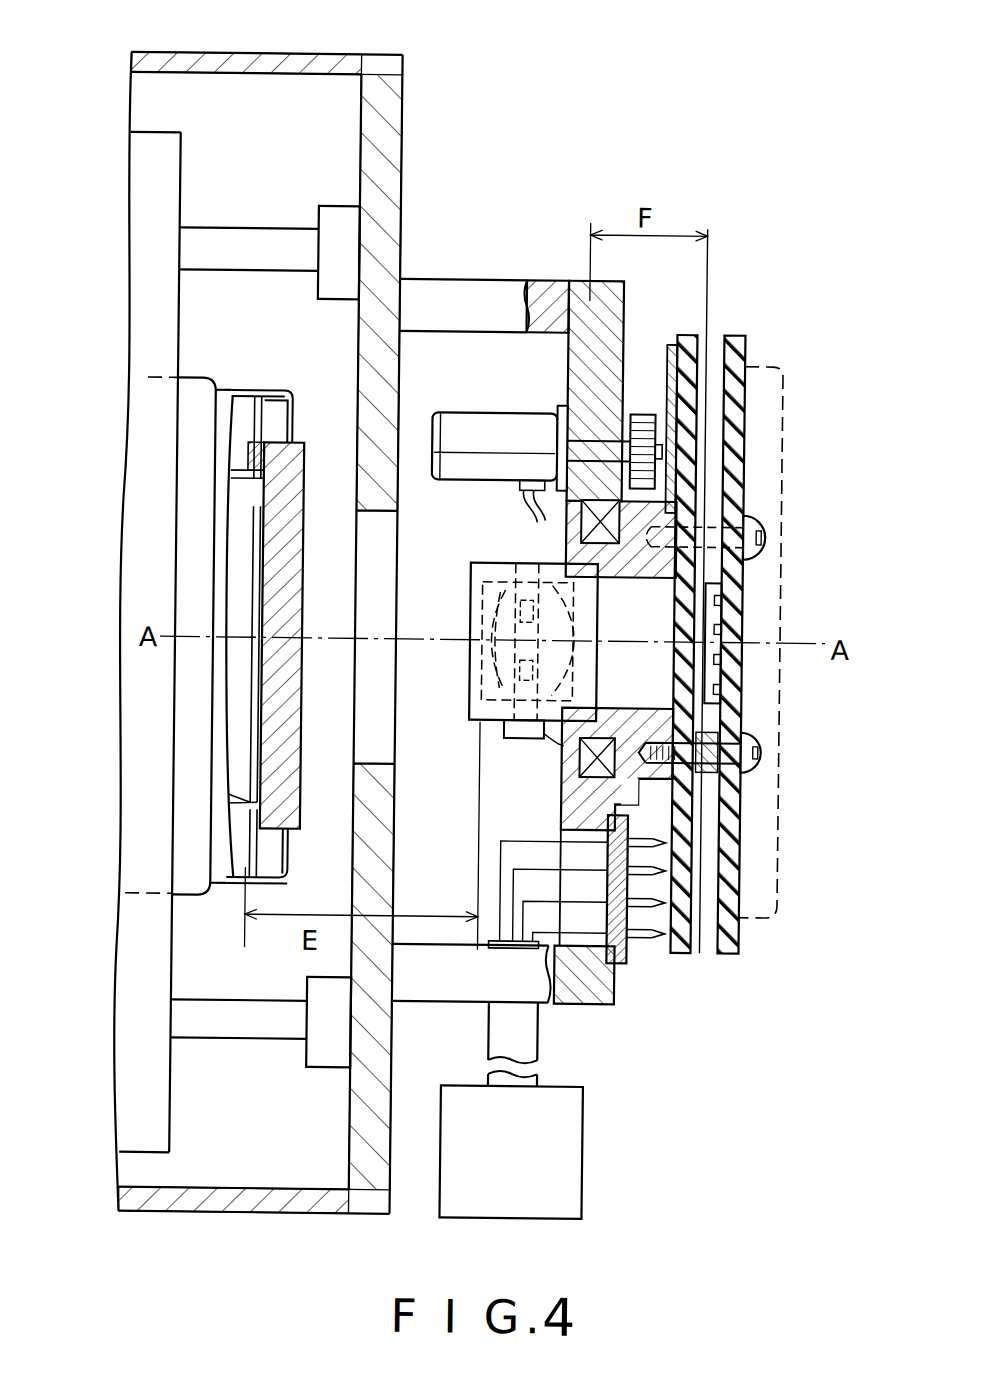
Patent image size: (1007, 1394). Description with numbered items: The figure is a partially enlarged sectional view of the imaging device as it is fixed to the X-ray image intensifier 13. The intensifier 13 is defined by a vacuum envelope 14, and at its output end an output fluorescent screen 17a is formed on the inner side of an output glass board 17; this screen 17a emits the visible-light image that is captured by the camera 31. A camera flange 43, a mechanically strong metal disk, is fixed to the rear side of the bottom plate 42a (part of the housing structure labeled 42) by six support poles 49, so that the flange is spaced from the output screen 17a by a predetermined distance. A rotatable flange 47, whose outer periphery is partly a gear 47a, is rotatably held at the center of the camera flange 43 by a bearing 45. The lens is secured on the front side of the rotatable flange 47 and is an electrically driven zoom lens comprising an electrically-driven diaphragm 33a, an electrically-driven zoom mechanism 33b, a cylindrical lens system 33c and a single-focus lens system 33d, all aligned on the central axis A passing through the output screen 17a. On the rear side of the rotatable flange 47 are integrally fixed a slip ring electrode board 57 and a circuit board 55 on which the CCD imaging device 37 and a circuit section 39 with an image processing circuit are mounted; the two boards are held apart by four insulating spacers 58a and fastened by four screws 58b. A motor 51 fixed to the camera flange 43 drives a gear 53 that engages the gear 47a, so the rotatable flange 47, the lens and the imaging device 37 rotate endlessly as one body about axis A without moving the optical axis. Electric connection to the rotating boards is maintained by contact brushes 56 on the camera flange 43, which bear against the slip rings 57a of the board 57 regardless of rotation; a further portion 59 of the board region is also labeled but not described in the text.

The X-ray image intensifier 13 is at (195, 906).
The vacuum envelope 14 is at (204, 384).
The output glass board 17 is at (300, 831).
The output fluorescent screen 17a is at (259, 738).
The camera 31 is at (722, 226).
The electrically-driven diaphragm 33a is at (530, 703).
The electrically-driven zoom mechanism 33b is at (491, 580).
The cylindrical lens system 33c is at (482, 680).
The single-focus lens system 33d is at (597, 637).
The CCD imaging device 37 is at (721, 583).
The circuit section 39 is at (782, 742).
The housing plate 42 is at (238, 58).
The bottom plate 42a is at (397, 194).
The camera flange 43 is at (615, 346).
The bearing 45 is at (598, 738).
The rotatable flange 47 is at (640, 577).
The gear 47a is at (632, 487).
The support poles 49 is at (462, 297).
The motor 51 is at (488, 426).
The gear 53 is at (639, 413).
The circuit board 55 is at (738, 353).
The contact brushes 56 is at (650, 912).
The slip ring electrode board 57 is at (690, 333).
The slip rings 57a is at (668, 841).
The insulating spacers 58a is at (706, 518).
The screws 58b is at (766, 537).
The board portion 59 is at (704, 788).